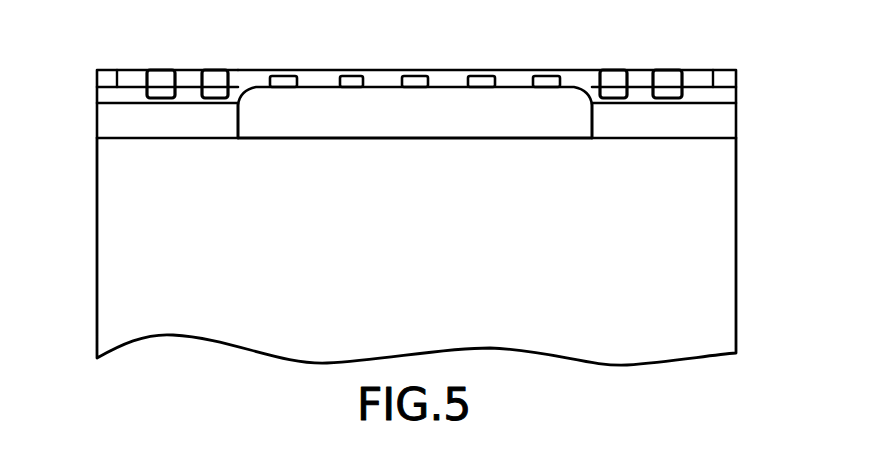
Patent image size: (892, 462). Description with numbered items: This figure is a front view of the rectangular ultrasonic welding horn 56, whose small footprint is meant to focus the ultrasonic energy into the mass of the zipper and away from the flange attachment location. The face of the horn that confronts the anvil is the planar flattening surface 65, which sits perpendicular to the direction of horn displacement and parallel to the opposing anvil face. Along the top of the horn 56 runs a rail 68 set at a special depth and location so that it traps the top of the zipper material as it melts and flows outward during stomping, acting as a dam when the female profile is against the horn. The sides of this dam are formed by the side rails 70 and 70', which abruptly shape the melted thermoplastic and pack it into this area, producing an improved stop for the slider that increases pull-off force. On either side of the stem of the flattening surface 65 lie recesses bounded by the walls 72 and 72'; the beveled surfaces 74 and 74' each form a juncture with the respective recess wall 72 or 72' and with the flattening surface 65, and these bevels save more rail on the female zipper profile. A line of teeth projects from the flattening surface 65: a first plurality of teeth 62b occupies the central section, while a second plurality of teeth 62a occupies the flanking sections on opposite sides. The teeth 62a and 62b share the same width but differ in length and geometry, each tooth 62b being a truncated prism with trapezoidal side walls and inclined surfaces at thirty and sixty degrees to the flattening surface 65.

The horn 56 is at (736, 232).
The wall of recess 72 is at (692, 120).
The wall of recess 72' is at (138, 121).
The beveled surface 74 is at (690, 86).
The beveled surface 74' is at (135, 83).
The side rail 70 is at (503, 52).
The side rail 70' is at (156, 54).
The teeth 62a is at (213, 82).
The teeth 62b is at (350, 73).
The flattening surface 65 is at (641, 83).
The rail 68 is at (517, 75).